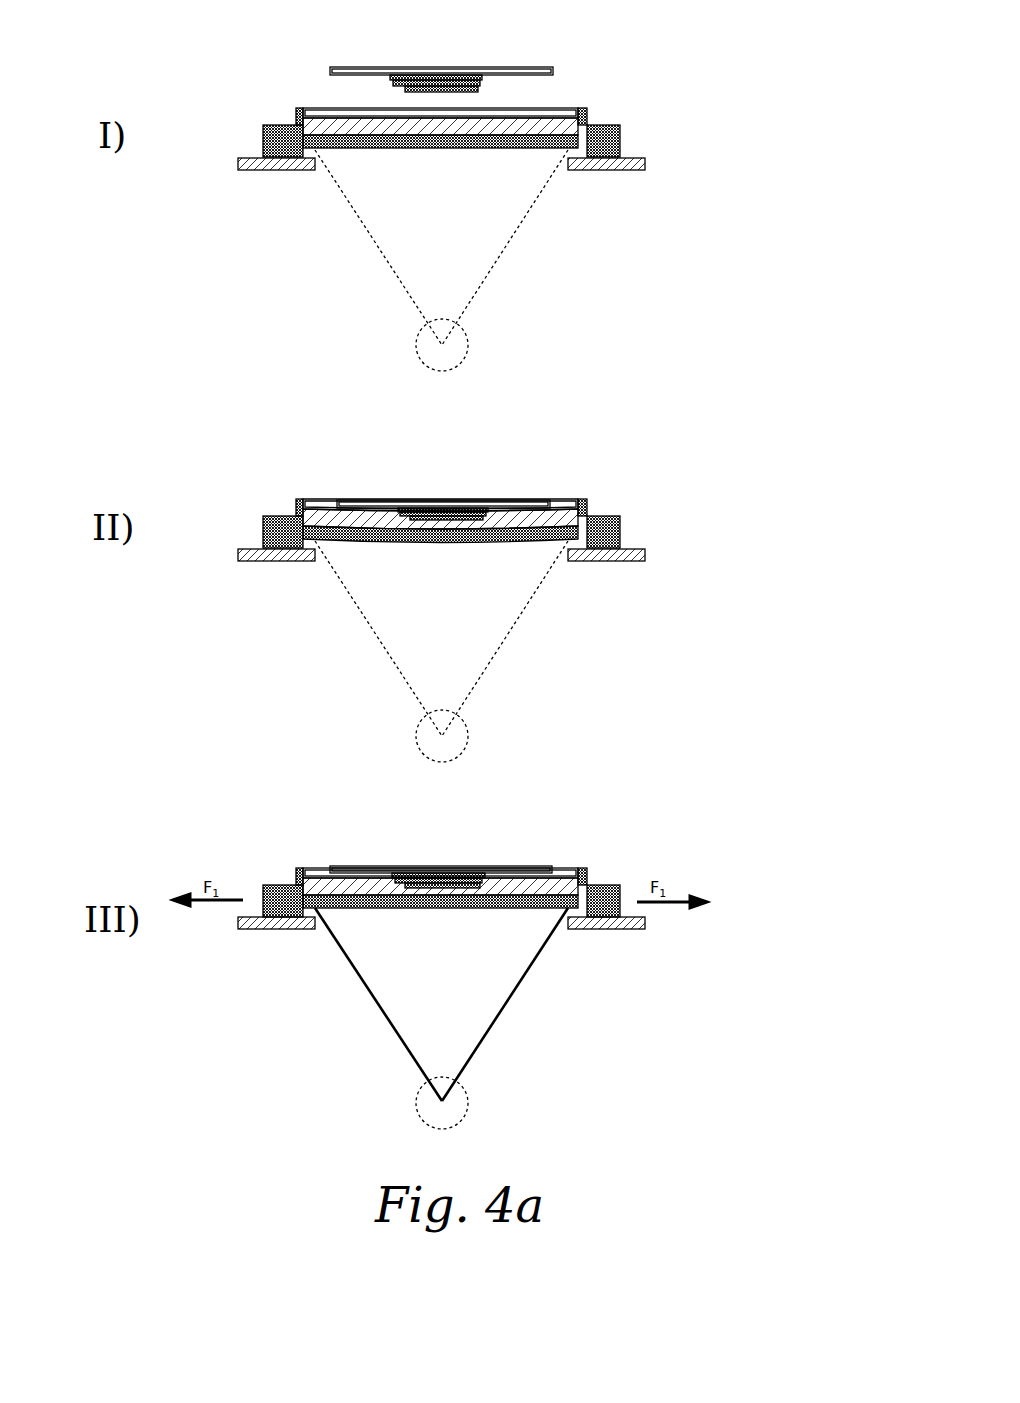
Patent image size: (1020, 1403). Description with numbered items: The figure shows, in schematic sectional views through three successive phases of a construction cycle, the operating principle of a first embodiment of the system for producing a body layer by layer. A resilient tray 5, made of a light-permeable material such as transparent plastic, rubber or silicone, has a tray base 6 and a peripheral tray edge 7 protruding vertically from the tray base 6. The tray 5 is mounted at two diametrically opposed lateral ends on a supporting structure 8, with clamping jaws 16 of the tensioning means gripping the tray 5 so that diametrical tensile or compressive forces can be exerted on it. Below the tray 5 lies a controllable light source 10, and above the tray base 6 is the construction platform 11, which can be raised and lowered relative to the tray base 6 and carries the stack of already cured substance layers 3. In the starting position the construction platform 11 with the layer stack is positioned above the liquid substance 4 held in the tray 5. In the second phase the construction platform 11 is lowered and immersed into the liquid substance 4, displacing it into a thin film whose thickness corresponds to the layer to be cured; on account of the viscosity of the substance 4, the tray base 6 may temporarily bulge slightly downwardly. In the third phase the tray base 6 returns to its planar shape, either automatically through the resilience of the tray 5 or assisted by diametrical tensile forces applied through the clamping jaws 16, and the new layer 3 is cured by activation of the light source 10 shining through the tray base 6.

The substance layer 3 is at (410, 88).
The liquid substance 4 is at (343, 127).
The tray 5 is at (673, 82).
The tray base 6 is at (463, 150).
The tray edge 7 is at (587, 110).
The supporting structure 8 is at (263, 138).
The light source 10 is at (460, 343).
The construction platform 11 is at (533, 70).
The clamping jaw 16 is at (240, 163).